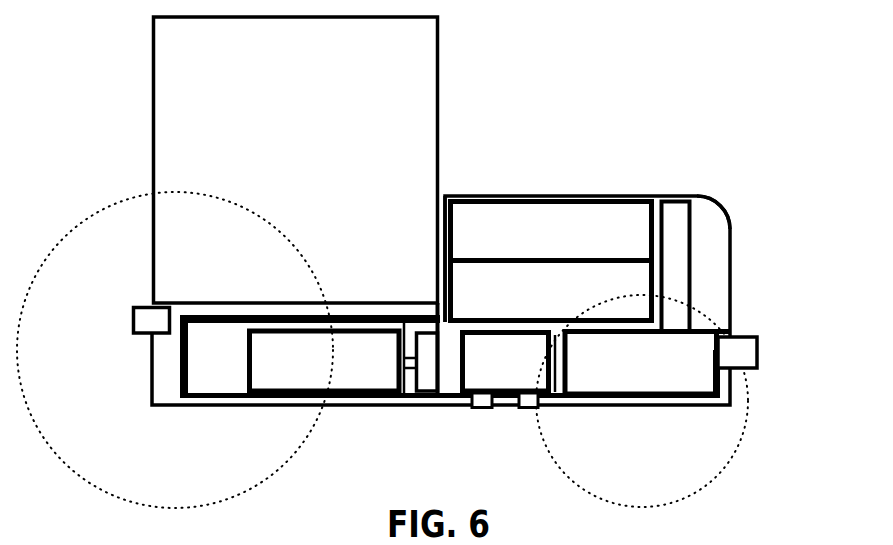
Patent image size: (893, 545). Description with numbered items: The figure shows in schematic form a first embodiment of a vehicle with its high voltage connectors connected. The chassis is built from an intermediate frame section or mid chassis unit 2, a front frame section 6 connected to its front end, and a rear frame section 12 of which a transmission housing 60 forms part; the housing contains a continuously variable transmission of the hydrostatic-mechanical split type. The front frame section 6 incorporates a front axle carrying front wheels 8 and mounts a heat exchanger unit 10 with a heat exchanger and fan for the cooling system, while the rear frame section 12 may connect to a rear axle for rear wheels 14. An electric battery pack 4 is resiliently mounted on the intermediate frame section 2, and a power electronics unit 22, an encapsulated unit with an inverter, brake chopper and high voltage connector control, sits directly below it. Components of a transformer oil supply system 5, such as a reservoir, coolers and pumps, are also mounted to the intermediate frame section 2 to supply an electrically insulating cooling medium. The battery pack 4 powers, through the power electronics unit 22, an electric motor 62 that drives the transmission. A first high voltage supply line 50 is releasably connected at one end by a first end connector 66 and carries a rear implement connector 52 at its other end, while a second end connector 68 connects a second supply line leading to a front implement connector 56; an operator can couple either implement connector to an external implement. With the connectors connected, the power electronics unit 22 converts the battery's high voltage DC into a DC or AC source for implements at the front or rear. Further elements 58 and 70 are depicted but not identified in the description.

The intermediate frame section 2 is at (450, 383).
The electric battery pack 4 is at (548, 228).
The transformer oil supply system components 5 is at (458, 348).
The front frame section 6 is at (641, 376).
The front wheels 8 is at (718, 445).
The heat exchanger unit 10 is at (668, 223).
The rear frame section 12 is at (163, 373).
The rear wheels 14 is at (107, 230).
The power electronics unit 22 is at (492, 374).
The first high voltage supply line 50 is at (227, 398).
The rear implement connector 52 is at (134, 322).
The front implement connector 56 is at (747, 353).
The rounded housing corner 58 is at (740, 242).
The transmission housing 60 is at (270, 376).
The electric motor 62 is at (423, 335).
The first end connector 66 is at (482, 400).
The second end connector 68 is at (533, 407).
The display panel 70 is at (284, 96).